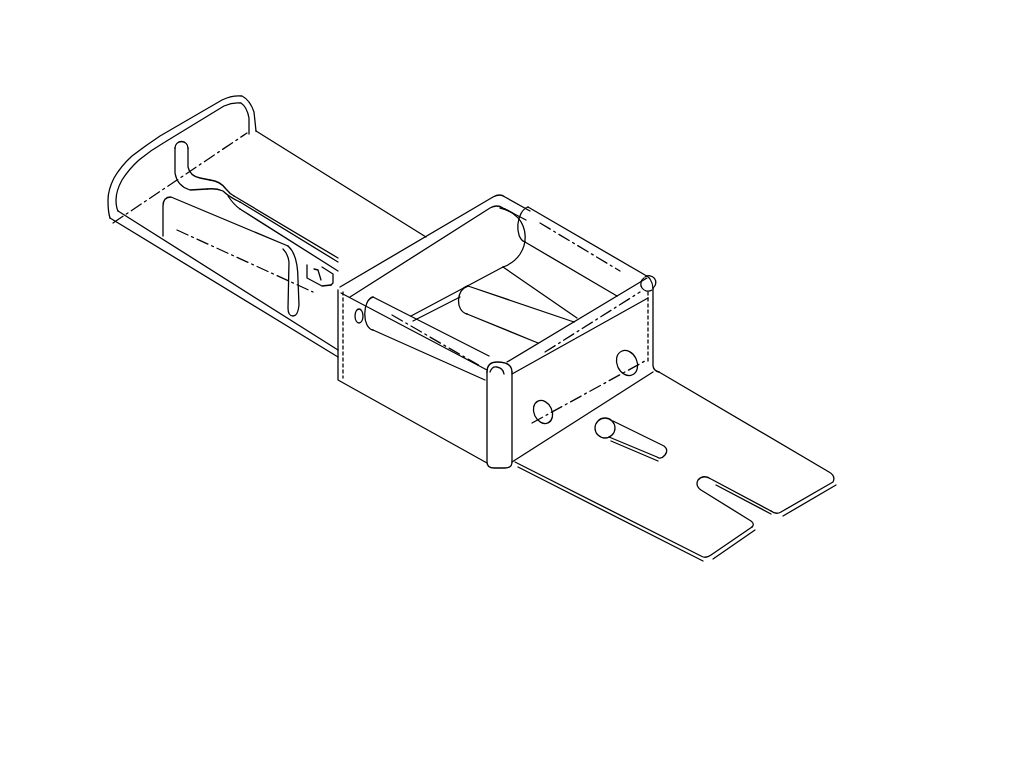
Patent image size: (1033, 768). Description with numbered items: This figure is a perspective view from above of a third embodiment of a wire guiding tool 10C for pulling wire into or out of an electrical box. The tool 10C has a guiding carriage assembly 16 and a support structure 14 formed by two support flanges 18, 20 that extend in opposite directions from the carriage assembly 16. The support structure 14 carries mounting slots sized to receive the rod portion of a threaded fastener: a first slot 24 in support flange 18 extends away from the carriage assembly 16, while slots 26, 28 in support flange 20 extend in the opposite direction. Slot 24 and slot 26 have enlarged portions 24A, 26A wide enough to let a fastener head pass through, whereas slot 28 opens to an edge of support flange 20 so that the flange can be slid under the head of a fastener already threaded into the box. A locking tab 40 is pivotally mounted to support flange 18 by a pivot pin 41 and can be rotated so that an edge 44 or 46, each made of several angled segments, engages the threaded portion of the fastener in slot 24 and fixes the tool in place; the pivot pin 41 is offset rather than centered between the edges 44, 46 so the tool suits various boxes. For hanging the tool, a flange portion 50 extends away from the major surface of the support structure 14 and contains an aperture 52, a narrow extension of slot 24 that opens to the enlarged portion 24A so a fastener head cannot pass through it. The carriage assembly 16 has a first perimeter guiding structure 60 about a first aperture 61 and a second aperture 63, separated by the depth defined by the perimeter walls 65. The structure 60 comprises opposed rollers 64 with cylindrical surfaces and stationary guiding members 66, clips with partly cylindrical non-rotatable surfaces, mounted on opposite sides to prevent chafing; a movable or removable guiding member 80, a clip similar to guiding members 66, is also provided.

The wire guiding tool 10C is at (655, 160).
The support structure 14 is at (175, 72).
The guiding carriage assembly 16 is at (672, 313).
The support flange 18 is at (352, 177).
The support flange 20 is at (765, 417).
The first slot 24 is at (316, 279).
The enlarged portion 24A is at (223, 176).
The slot 26 is at (635, 453).
The enlarged portion 26A is at (600, 440).
The slot 28 is at (755, 497).
The locking tab 40 is at (180, 230).
The pivot pin 41 is at (308, 248).
The edge 44 is at (253, 223).
The edge 46 is at (328, 277).
The flange portion 50 is at (173, 122).
The aperture 52 is at (183, 146).
The first perimeter guiding structure 60 is at (667, 275).
The first aperture 61 is at (583, 273).
The second aperture 63 is at (483, 322).
The roller 64 is at (490, 212).
The perimeter wall 65 is at (448, 452).
The guiding member 66 is at (553, 208).
The guiding member 80 is at (633, 300).